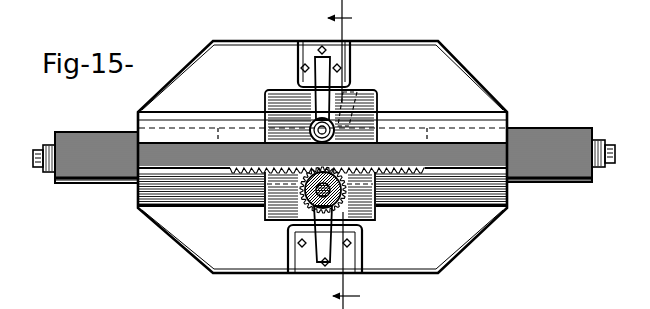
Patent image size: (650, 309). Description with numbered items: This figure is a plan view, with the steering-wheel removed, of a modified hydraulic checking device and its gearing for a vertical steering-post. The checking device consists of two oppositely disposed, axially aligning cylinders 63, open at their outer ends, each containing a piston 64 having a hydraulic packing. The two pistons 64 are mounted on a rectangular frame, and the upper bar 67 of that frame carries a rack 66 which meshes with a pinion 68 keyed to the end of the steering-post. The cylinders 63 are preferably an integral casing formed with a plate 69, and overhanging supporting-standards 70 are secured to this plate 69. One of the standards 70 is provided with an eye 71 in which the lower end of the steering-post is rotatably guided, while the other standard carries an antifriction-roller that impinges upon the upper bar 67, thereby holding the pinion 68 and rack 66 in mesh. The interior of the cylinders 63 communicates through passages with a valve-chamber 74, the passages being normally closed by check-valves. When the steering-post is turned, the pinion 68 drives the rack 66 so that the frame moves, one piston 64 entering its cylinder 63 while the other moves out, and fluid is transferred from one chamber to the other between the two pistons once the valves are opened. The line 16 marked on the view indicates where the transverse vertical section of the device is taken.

The section line 16 is at (350, 154).
The cylinders 63 is at (193, 116).
The piston 64 is at (93, 183).
The rack 66 is at (237, 165).
The upper bar 67 is at (503, 128).
The pinion 68 is at (300, 186).
The plate 69 is at (393, 262).
The supporting-standards 70 is at (318, 100).
The eye 71 is at (343, 202).
The valve-chamber 74 is at (349, 122).